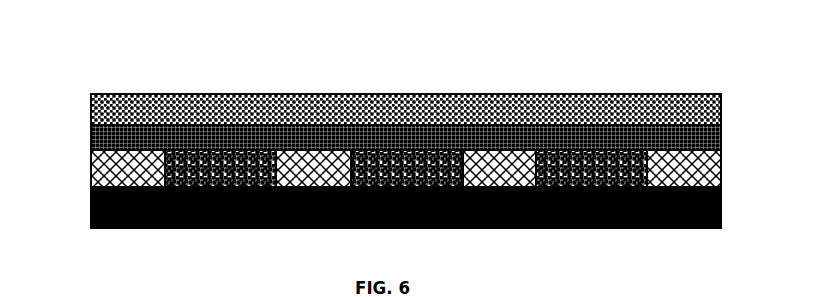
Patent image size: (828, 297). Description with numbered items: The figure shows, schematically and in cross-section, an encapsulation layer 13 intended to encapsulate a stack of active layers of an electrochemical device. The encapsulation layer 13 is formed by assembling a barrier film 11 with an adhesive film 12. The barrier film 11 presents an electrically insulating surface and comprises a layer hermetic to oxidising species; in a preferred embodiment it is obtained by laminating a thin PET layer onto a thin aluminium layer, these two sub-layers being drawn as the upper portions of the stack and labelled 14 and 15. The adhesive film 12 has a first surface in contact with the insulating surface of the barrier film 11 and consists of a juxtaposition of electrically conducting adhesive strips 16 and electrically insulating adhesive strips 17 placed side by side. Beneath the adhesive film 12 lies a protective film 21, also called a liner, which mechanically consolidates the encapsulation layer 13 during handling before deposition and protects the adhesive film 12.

The barrier film 11 is at (382, 103).
The adhesive film 12 is at (382, 221).
The encapsulation layer 13 is at (406, 175).
The top layer 14 is at (540, 98).
The intermediate layer 15 is at (202, 128).
The electrically conducting adhesive strips 16 is at (303, 168).
The electrically insulating adhesive strips 17 is at (202, 147).
The protective film 21 is at (541, 197).